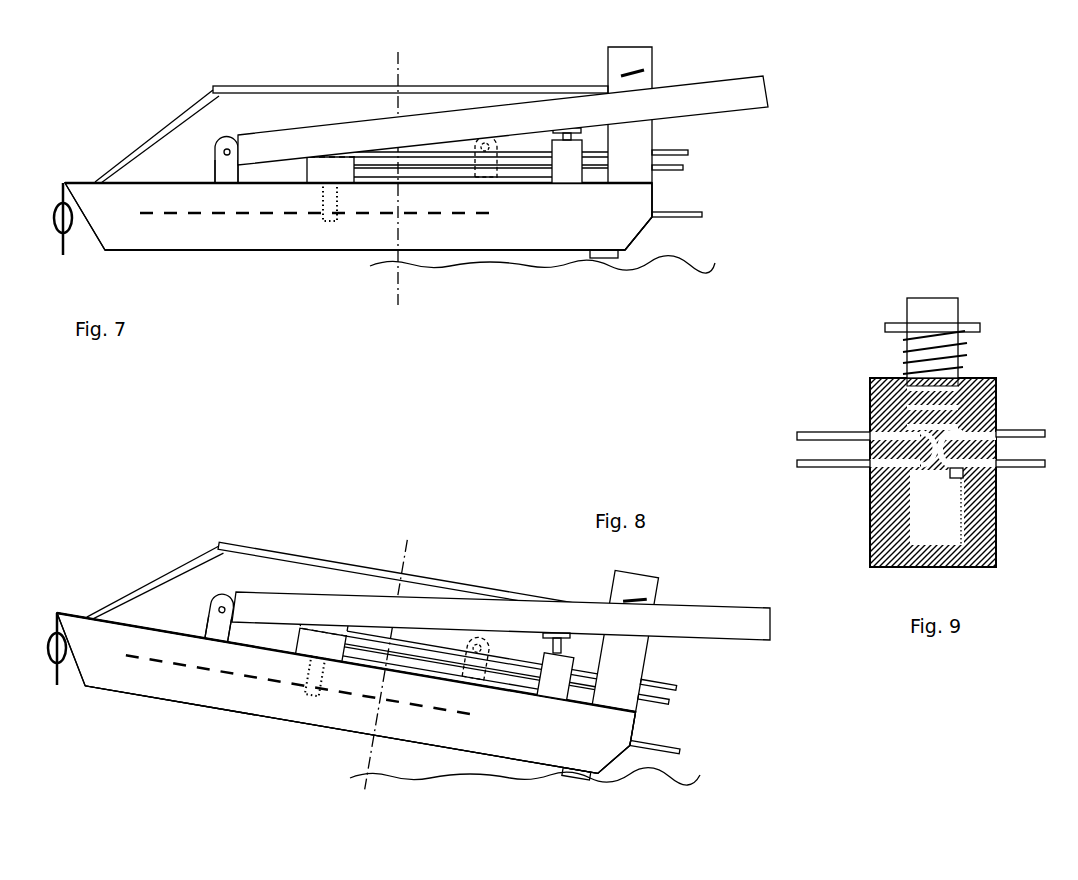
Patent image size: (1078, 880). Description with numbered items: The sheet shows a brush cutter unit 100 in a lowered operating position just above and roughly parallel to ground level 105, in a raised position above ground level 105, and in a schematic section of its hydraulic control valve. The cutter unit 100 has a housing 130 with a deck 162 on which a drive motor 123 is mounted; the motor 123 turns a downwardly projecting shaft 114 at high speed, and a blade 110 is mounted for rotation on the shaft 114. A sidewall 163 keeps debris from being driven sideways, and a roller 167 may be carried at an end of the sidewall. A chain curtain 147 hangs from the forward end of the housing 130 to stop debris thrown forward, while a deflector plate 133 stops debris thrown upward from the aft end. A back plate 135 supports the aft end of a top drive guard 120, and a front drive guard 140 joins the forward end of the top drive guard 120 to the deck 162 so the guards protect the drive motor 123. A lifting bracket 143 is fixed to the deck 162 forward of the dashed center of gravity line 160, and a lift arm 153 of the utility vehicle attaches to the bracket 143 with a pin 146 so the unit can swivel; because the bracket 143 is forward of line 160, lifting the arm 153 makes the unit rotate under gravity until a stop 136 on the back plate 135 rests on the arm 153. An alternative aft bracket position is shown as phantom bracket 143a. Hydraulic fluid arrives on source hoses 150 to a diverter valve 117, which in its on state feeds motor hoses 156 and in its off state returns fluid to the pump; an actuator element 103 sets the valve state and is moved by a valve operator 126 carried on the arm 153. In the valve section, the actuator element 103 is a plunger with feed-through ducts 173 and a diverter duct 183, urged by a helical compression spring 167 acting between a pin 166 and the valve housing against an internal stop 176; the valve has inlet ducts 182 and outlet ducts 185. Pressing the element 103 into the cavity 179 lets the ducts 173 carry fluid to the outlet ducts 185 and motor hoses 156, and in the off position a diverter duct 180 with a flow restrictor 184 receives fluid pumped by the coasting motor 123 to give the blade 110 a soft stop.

In FIG. 7, the cutter unit 100 is at (621, 316).
In FIG. 8, the cutter unit 100 is at (579, 827).
In FIG. 7, the actuator element 103 is at (568, 141).
In FIG. 8, the actuator element 103 is at (555, 653).
In FIG. 9, the actuator element 103 is at (947, 318).
In FIG. 7, the ground level 105 is at (470, 266).
In FIG. 8, the ground level 105 is at (432, 790).
In FIG. 7, the blade 110 is at (180, 217).
In FIG. 8, the blade 110 is at (137, 662).
In FIG. 7, the shaft 114 is at (325, 218).
In FIG. 8, the shaft 114 is at (313, 682).
In FIG. 7, the diverter valve 117 is at (551, 174).
In FIG. 8, the diverter valve 117 is at (530, 687).
In FIG. 9, the diverter valve 117 is at (850, 408).
In FIG. 7, the top drive guard 120 is at (270, 85).
In FIG. 8, the top drive guard 120 is at (267, 546).
In FIG. 7, the drive motor 123 is at (343, 137).
In FIG. 8, the drive motor 123 is at (325, 603).
In FIG. 7, the valve operator 126 is at (560, 128).
In FIG. 8, the valve operator 126 is at (553, 630).
In FIG. 7, the housing 130 is at (637, 232).
In FIG. 8, the housing 130 is at (623, 757).
In FIG. 7, the deflector plate 133 is at (690, 217).
In FIG. 8, the deflector plate 133 is at (682, 752).
In FIG. 7, the back plate 135 is at (618, 51).
In FIG. 8, the back plate 135 is at (610, 583).
In FIG. 7, the stop 136 is at (627, 65).
In FIG. 8, the stop 136 is at (632, 597).
In FIG. 7, the front drive guard 140 is at (137, 148).
In FIG. 8, the front drive guard 140 is at (140, 587).
In FIG. 7, the lifting bracket 143 is at (218, 167).
In FIG. 8, the lifting bracket 143 is at (212, 618).
In FIG. 7, the phantom bracket 143a is at (478, 136).
In FIG. 8, the phantom bracket 143a is at (460, 637).
In FIG. 7, the pin 146 is at (217, 147).
In FIG. 8, the pin 146 is at (217, 598).
In FIG. 7, the chain curtain 147 is at (67, 247).
In FIG. 8, the chain curtain 147 is at (56, 683).
In FIG. 7, the hydraulic source hoses 150 is at (688, 156).
In FIG. 8, the hydraulic source hoses 150 is at (665, 700).
In FIG. 9, the hydraulic source hoses 150 is at (1012, 458).
In FIG. 7, the lift arm 153 is at (745, 102).
In FIG. 8, the lift arm 153 is at (733, 635).
In FIG. 7, the motor hoses 156 is at (443, 157).
In FIG. 8, the motor hoses 156 is at (402, 643).
In FIG. 9, the motor hoses 156 is at (797, 460).
In FIG. 7, the center of gravity line 160 is at (396, 281).
In FIG. 8, the center of gravity line 160 is at (373, 758).
In FIG. 7, the deck 162 is at (152, 182).
In FIG. 8, the deck 162 is at (140, 625).
In FIG. 7, the sidewall 163 is at (250, 253).
In FIG. 8, the sidewall 163 is at (240, 709).
In FIG. 9, the pin 166 is at (887, 325).
In FIG. 7, the helical compression spring 167 is at (612, 258).
In FIG. 8, the helical compression spring 167 is at (603, 788).
In FIG. 9, the helical compression spring 167 is at (903, 354).
In FIG. 9, the feed-through duct 173 is at (950, 385).
In FIG. 9, the internal stop 176 is at (982, 488).
In FIG. 9, the cavity 179 is at (952, 523).
In FIG. 9, the diverter duct 180 is at (920, 468).
In FIG. 9, the inlet duct 182 is at (975, 452).
In FIG. 9, the diverter duct 183 is at (871, 548).
In FIG. 9, the flow restrictor 184 is at (905, 460).
In FIG. 9, the outlet duct 185 is at (877, 460).